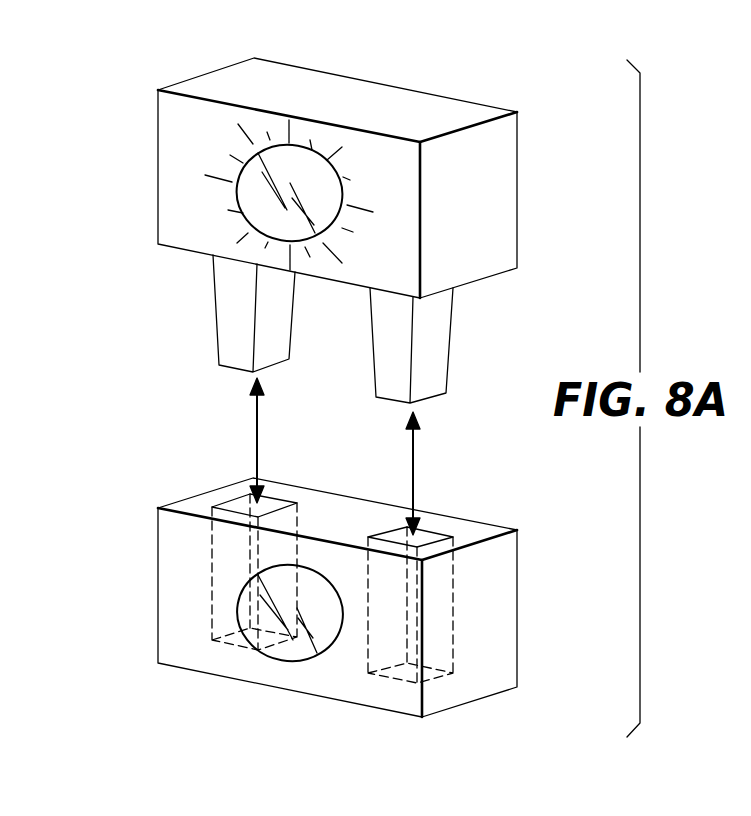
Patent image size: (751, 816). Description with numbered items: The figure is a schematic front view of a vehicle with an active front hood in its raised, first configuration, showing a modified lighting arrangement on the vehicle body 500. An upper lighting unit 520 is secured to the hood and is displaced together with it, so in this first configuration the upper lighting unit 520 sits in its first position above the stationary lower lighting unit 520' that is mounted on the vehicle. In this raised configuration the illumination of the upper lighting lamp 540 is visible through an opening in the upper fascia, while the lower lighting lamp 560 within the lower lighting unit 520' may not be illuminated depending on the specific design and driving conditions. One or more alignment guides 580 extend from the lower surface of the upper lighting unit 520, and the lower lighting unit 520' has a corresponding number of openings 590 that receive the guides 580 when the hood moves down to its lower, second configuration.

The base / docking housing 500 is at (495, 657).
The upper lighting unit 520 is at (239, 195).
The lower lighting unit 520' is at (226, 613).
The upper lighting lamp 540 is at (253, 192).
The lower lighting lamp 560 is at (330, 625).
The alignment guides 580 is at (232, 325).
The openings 590 is at (238, 503).